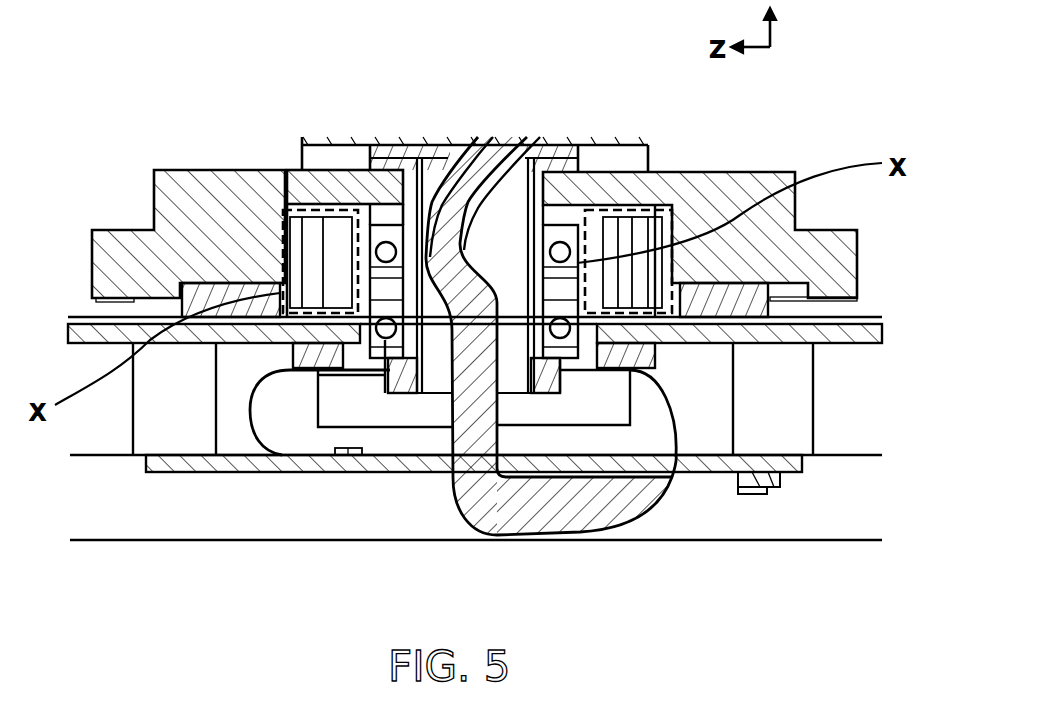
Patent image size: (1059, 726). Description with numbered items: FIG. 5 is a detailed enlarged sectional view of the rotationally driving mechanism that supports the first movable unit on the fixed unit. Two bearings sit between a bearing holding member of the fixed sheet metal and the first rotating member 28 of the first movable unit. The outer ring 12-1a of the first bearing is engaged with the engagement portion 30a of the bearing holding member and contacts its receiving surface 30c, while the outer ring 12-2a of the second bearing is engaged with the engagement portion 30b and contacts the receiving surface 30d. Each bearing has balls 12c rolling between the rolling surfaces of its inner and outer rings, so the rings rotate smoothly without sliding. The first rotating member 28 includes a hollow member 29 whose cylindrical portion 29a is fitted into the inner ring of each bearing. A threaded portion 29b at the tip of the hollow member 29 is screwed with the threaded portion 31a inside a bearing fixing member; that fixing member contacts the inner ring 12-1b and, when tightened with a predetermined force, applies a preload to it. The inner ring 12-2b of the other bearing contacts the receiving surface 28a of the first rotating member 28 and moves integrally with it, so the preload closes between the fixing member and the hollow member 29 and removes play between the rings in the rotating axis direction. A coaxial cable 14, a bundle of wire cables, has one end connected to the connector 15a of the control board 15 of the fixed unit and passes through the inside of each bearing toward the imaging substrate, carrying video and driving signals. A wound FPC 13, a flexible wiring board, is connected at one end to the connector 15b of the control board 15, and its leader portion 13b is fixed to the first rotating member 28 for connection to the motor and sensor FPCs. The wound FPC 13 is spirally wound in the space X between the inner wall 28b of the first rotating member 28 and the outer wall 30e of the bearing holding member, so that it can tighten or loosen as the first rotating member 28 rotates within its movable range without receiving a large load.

The wound FPC 13 is at (262, 195).
The leader portion 13b is at (222, 198).
The coaxial cable 14 is at (470, 155).
The control board 15 is at (160, 472).
The connector 15a is at (763, 495).
The connector 15b is at (350, 458).
The outer ring 12-1a is at (412, 350).
The inner ring 12-1b is at (400, 362).
The outer ring 12-2a is at (570, 168).
The inner ring 12-2b is at (536, 165).
The balls 12c is at (388, 368).
The first rotating member 28 is at (736, 193).
The receiving surface 28a is at (380, 172).
The inner wall 28b is at (285, 262).
The hollow member 29 is at (428, 198).
The cylindrical portion 29a is at (572, 262).
The threaded portion 29b is at (642, 510).
The engagement portion 30a is at (677, 457).
The engagement portion 30b is at (668, 200).
The receiving surface 30c is at (345, 368).
The receiving surface 30d is at (313, 245).
The outer wall 30e is at (280, 278).
The threaded portion 31a is at (533, 330).